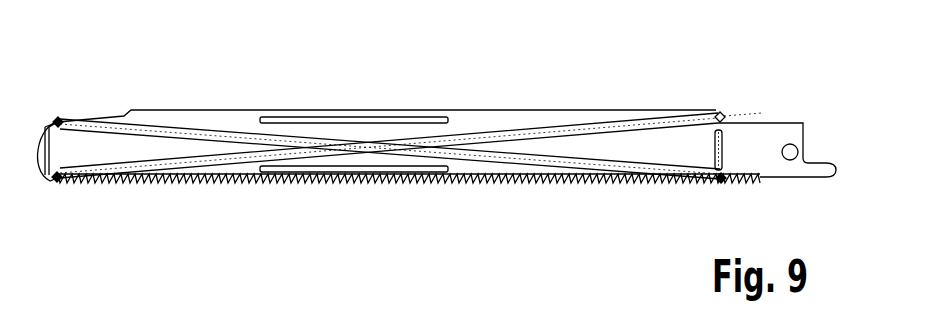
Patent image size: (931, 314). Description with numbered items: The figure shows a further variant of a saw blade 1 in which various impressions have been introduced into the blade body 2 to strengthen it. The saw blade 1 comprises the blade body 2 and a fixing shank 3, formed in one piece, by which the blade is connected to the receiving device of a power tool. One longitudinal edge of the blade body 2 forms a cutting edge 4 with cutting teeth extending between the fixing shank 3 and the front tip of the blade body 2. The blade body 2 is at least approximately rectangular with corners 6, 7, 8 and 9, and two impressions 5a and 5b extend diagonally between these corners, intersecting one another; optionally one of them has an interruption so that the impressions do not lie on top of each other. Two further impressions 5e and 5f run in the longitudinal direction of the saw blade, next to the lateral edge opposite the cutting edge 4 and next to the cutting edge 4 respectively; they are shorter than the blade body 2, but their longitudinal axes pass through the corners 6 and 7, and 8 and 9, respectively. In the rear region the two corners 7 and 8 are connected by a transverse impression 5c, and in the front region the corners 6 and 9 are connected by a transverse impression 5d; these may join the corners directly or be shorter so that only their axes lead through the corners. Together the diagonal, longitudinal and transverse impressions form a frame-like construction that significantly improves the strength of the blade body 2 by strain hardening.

The saw blade 1 is at (716, 73).
The blade body 2 is at (303, 111).
The fixing shank 3 is at (773, 165).
The cutting edge 4 is at (400, 184).
The impression 5a is at (553, 170).
The impression 5b is at (557, 128).
The impression 5c is at (717, 147).
The impression 5d is at (48, 150).
The impression 5e is at (356, 120).
The impression 5f is at (355, 172).
The corner 6 is at (58, 120).
The corner 7 is at (723, 118).
The corner 8 is at (722, 183).
The corner 9 is at (52, 181).